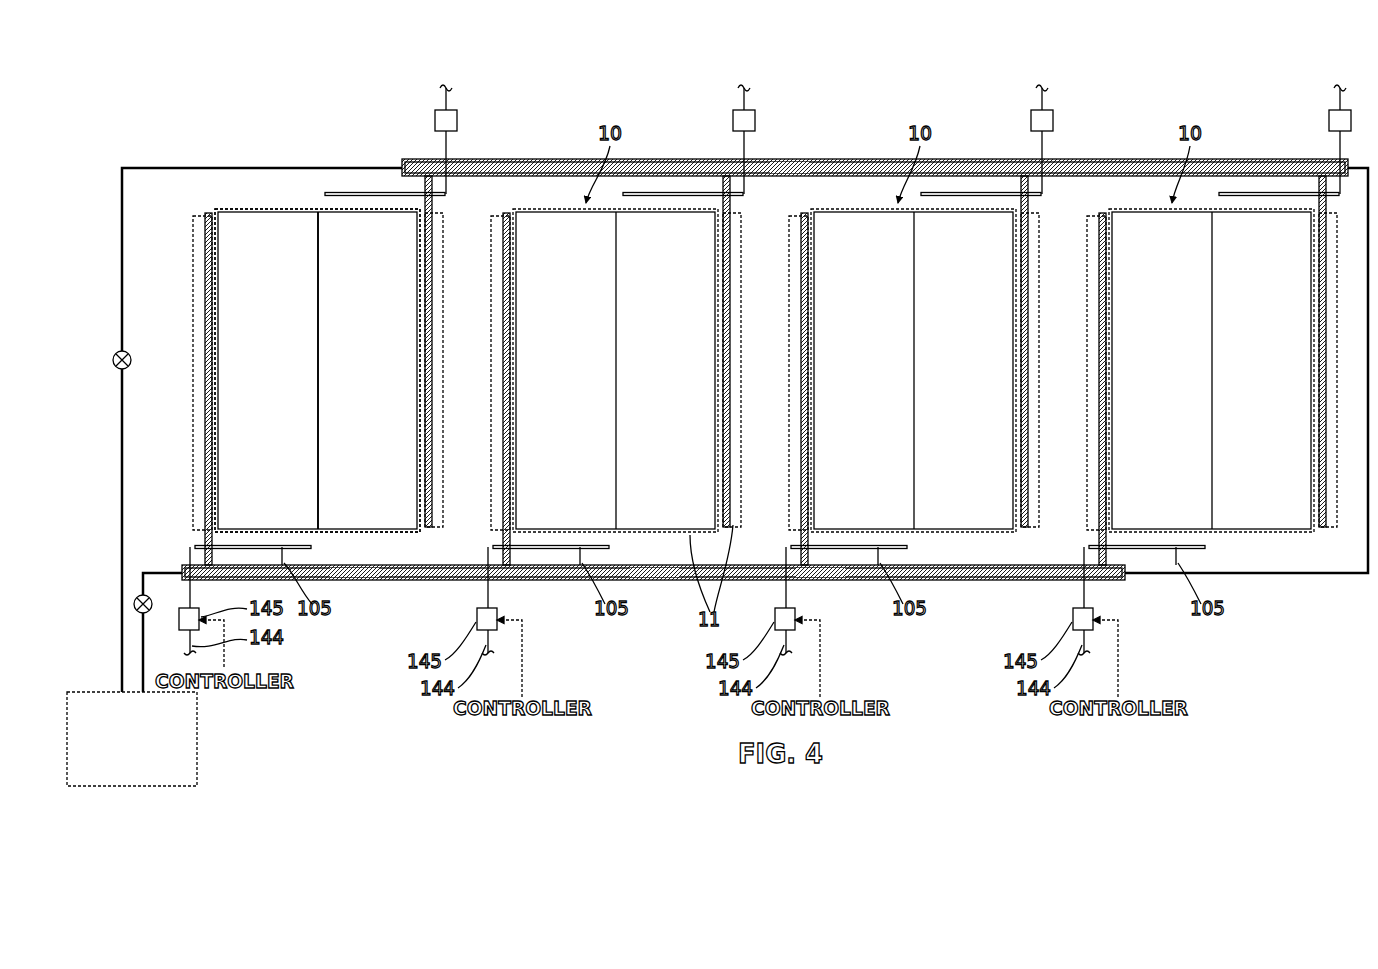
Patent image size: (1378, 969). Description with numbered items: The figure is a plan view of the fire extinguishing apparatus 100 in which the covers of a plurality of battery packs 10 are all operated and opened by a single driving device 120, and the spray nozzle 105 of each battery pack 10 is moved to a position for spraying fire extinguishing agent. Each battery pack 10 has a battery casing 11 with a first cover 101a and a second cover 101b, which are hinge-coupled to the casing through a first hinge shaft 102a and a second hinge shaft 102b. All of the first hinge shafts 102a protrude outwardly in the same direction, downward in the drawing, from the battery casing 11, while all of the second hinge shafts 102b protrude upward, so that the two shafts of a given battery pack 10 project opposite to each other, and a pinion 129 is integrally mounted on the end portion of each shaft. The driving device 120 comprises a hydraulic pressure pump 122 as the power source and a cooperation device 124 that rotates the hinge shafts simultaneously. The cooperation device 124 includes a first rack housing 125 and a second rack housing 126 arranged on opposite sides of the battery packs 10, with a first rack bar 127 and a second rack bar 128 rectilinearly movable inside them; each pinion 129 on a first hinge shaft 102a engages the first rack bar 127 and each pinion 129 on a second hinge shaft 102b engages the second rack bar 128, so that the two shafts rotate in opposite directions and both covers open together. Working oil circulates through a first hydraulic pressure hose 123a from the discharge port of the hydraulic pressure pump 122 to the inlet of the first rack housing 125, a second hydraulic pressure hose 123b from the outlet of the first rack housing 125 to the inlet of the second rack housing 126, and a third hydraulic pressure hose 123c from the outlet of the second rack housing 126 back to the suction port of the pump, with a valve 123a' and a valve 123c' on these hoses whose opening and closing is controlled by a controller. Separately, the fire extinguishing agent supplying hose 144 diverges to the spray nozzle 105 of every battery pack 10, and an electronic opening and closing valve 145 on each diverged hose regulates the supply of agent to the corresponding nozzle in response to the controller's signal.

The battery pack 10 is at (276, 203).
The battery casing 11 is at (199, 478).
The battery cell pressing system 100 is at (408, 631).
The first cover 101a is at (250, 225).
The second cover 101b is at (386, 225).
The first hinge shaft 102a is at (205, 232).
The second hinge shaft 102b is at (432, 262).
The spray nozzle 105 is at (360, 192).
The driving device 120 is at (201, 796).
The hydraulic pressure pump 122 is at (199, 770).
The first hydraulic pressure hose 123a is at (167, 584).
The valve 123a' is at (150, 565).
The second hydraulic pressure hose 123b is at (1280, 577).
The third hydraulic pressure hose 123c is at (262, 430).
The valve 123c' is at (148, 335).
The cooperation device 124 is at (567, 585).
The first rack housing 125 is at (357, 582).
The second rack housing 126 is at (852, 165).
The first rack bar 127 is at (652, 583).
The second rack bar 128 is at (790, 165).
The pinion 129 is at (822, 578).
The fire extinguishing agent supplying hose 144 is at (447, 95).
The opening and closing valve 145 is at (457, 122).